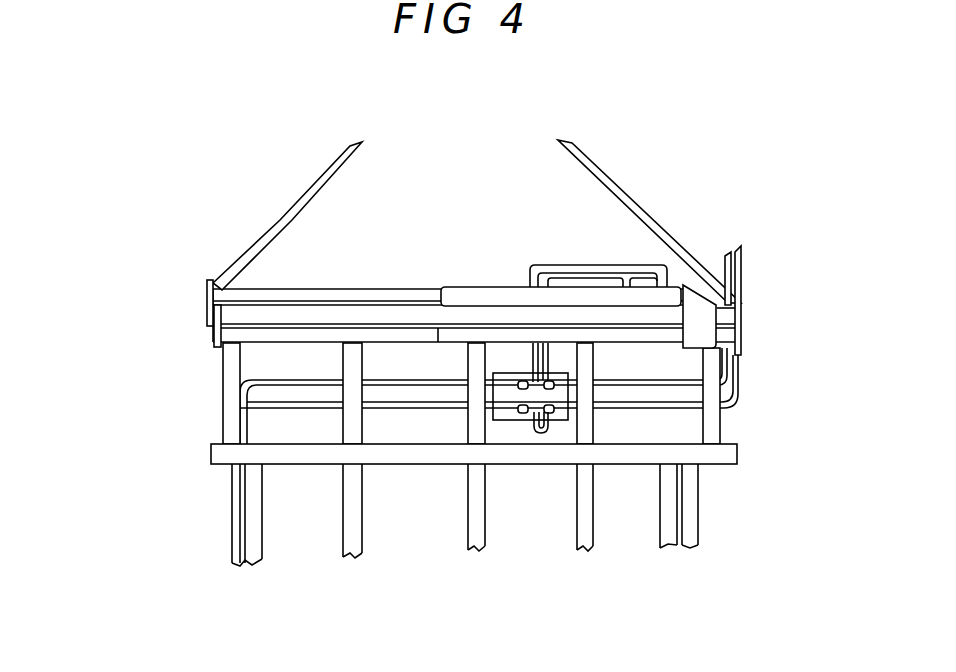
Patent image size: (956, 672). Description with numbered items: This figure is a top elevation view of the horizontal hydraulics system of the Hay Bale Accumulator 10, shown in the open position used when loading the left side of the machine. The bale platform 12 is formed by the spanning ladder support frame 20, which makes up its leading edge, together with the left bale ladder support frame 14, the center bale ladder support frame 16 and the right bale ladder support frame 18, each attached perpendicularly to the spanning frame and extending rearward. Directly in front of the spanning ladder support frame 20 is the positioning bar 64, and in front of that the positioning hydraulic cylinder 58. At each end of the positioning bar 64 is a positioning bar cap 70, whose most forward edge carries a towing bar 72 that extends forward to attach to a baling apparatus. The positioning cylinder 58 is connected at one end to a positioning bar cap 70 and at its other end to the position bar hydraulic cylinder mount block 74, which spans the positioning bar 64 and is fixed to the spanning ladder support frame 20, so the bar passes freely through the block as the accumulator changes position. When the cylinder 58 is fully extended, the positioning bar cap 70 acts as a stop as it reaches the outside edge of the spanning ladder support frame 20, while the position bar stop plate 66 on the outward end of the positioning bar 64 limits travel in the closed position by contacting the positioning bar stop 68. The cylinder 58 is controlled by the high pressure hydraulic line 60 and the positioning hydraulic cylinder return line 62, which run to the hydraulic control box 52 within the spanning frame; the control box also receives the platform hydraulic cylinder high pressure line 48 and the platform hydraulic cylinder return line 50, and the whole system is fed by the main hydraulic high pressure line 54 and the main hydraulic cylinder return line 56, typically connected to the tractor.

The Hay Bale Accumulator 10 is at (185, 240).
The bale platform 12 is at (214, 498).
The left bale ladder support frame 14 is at (292, 484).
The center bale ladder support frame 16 is at (528, 487).
The right bale ladder support frame 18 is at (680, 554).
The spanning ladder support frame 20 is at (217, 392).
The platform hydraulic cylinder high pressure line 48 is at (405, 393).
The platform hydraulic cylinder return line 50 is at (428, 416).
The hydraulic control box 52 is at (517, 422).
The main hydraulic high pressure line 54 is at (722, 247).
The main hydraulic cylinder return line 56 is at (741, 240).
The positioning hydraulic cylinder 58 is at (467, 283).
The high pressure hydraulic line 60 is at (612, 264).
The positioning hydraulic cylinder return line 62 is at (560, 276).
The positioning bar 64 is at (351, 315).
The position bar stop plate 66 is at (224, 320).
The positioning bar stop 68 is at (433, 333).
The positioning bar cap 70 is at (205, 303).
The towing bar 72 is at (552, 142).
The position bar hydraulic cylinder mount block 74 is at (700, 318).